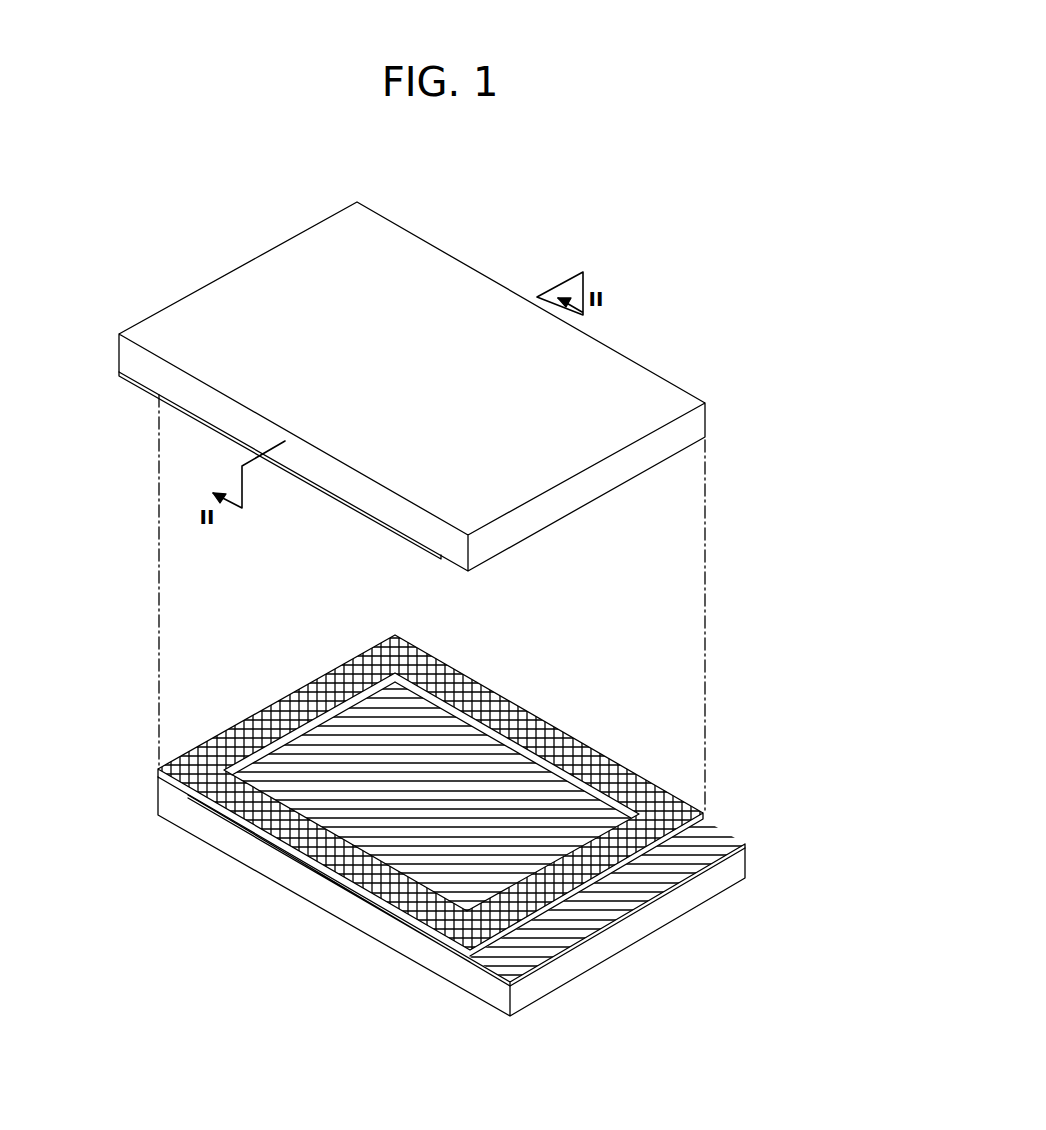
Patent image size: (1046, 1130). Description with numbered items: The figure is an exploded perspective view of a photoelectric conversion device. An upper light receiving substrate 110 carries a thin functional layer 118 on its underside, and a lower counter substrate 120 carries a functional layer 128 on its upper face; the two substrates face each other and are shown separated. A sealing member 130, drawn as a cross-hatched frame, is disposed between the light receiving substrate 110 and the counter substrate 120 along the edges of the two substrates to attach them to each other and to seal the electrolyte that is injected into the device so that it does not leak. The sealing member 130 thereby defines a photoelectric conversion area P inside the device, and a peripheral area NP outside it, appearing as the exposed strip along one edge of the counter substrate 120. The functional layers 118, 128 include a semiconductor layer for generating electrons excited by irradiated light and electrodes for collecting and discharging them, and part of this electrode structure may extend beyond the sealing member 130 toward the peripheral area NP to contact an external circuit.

The light receiving substrate 110 is at (637, 383).
The functional layer 118 is at (387, 525).
The counter substrate 120 is at (470, 890).
The functional layer 128 is at (432, 803).
The sealing member 130 is at (573, 752).
The photoelectric conversion area P is at (440, 752).
The peripheral area NP is at (692, 850).